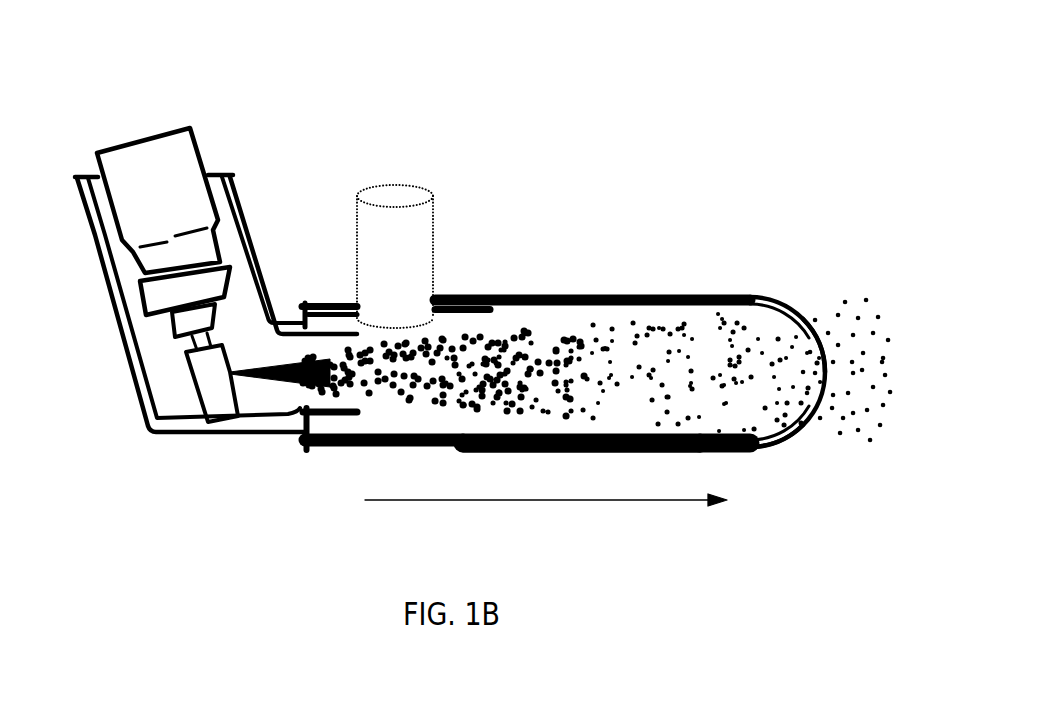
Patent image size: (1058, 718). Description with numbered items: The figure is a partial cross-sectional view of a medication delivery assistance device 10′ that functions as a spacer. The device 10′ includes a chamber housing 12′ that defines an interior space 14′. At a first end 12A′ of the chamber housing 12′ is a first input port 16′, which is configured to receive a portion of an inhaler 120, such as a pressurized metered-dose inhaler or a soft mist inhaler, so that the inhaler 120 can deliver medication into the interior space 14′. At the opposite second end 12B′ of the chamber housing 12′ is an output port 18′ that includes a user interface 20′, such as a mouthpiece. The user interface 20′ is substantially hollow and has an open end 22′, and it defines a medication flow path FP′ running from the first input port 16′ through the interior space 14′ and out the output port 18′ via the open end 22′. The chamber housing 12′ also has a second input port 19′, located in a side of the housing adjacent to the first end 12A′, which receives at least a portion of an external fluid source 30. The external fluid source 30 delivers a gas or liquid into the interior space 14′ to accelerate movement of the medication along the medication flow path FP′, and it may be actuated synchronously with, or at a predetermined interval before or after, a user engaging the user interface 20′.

The medication delivery assistance device 10′ is at (783, 56).
The inhaler 120 is at (168, 182).
The external fluid source 30 is at (378, 234).
The first input port 16′ is at (288, 320).
The second input port 19′ is at (453, 297).
The interior space 14′ is at (547, 323).
The chamber housing 12′ is at (637, 294).
The output port 18′ is at (818, 333).
The user interface 20′ is at (825, 333).
The open end 22′ is at (825, 376).
The first end 12A′ is at (307, 443).
The second end 12B′ is at (767, 450).
The medication flow path FP′ is at (546, 485).